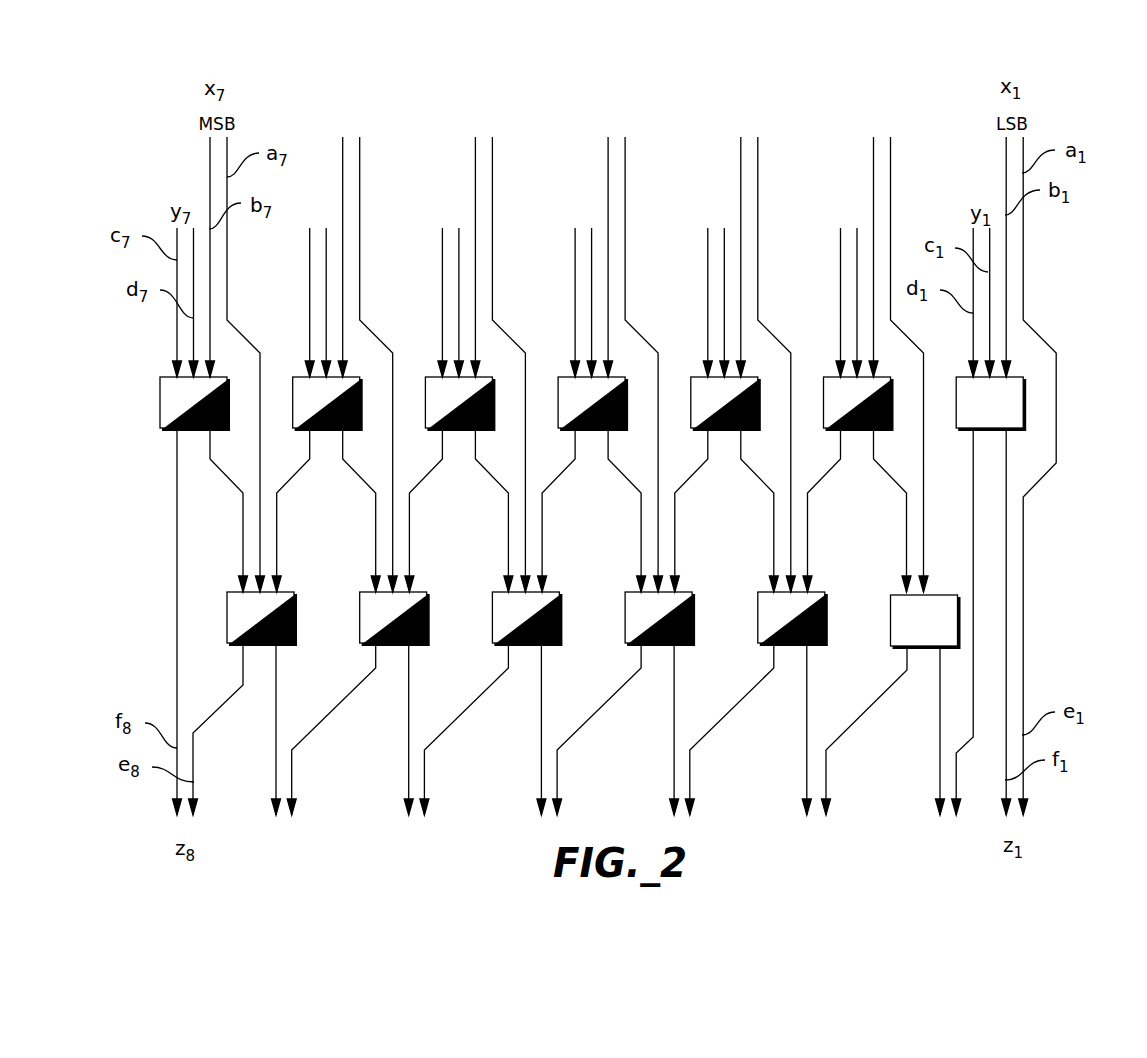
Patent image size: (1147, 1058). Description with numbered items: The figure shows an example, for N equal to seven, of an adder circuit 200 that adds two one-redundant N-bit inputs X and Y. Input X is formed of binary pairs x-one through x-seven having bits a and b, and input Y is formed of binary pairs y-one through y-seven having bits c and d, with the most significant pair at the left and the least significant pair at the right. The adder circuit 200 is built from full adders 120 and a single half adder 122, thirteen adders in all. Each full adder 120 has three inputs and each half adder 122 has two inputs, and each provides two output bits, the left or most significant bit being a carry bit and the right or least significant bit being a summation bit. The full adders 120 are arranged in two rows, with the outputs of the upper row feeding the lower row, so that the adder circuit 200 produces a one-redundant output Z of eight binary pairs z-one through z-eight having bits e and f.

The full adder 120 is at (1024, 412).
The half adder 122 is at (958, 623).
The adder circuit 200 is at (1055, 535).